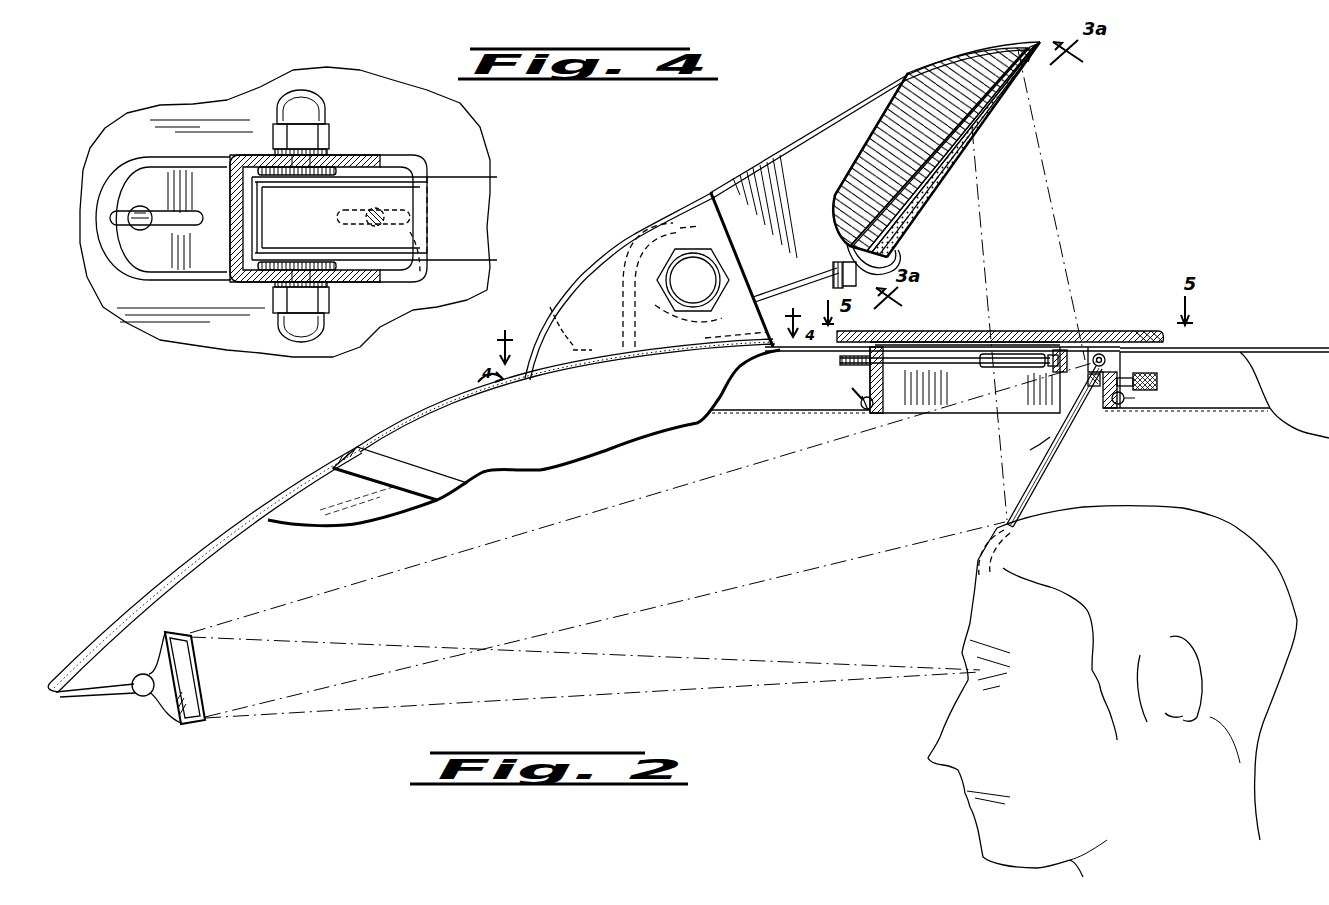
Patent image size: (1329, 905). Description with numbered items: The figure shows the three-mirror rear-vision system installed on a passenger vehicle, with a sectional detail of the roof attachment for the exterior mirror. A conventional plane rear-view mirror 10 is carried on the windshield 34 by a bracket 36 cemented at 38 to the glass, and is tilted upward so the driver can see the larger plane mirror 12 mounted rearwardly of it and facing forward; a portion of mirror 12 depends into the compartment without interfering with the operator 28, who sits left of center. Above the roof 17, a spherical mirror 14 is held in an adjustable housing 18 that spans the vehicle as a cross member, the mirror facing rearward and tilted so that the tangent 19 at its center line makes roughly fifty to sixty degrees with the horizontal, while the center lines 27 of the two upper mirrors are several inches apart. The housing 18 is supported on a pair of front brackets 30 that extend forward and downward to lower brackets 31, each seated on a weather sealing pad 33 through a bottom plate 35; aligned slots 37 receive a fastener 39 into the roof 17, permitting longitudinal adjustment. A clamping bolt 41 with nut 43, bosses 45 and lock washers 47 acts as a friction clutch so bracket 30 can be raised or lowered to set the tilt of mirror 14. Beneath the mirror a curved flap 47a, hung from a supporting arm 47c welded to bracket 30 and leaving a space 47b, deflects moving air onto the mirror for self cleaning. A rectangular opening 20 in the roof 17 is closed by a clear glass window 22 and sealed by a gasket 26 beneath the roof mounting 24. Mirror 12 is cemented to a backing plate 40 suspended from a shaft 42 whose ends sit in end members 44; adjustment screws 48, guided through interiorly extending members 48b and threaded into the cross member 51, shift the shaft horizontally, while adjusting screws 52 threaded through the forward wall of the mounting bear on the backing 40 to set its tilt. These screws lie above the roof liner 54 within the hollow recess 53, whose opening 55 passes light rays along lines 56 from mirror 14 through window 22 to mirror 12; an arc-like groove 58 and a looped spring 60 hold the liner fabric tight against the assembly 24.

In FIG. 2, the rear-view mirror 10 is at (196, 730).
In FIG. 2, the plane mirror 12 is at (1001, 529).
In FIG. 2, the spherical mirror 14 is at (995, 114).
In FIG. 4, the roof 17 is at (477, 147).
In FIG. 2, the roof 17 is at (1287, 348).
In FIG. 2, the holding device 18 is at (915, 66).
In FIG. 2, the tangent to the face of the spherical mirror 19 is at (915, 209).
In FIG. 2, the rectangular opening 20 is at (1114, 350).
In FIG. 2, the clear glass window 22 is at (1090, 332).
In FIG. 2, the roof mounting 24 is at (1156, 330).
In FIG. 2, the sealing gasket 26 is at (1170, 343).
In FIG. 2, the center lines of mirrors 27 is at (960, 162).
In FIG. 2, the operator 28 is at (1225, 519).
In FIG. 4, the front brackets 30 is at (485, 225).
In FIG. 2, the front brackets 30 is at (806, 153).
In FIG. 4, the lower bracket 31 is at (362, 152).
In FIG. 2, the lower bracket 31 is at (655, 238).
In FIG. 2, the weather sealing pad 33 is at (570, 372).
In FIG. 2, the windshield 34 is at (207, 560).
In FIG. 4, the bottom plate 35 is at (188, 255).
In FIG. 2, the bottom plate 35 is at (615, 360).
In FIG. 2, the bracket 36 is at (116, 692).
In FIG. 4, the longitudinal slot 37 is at (175, 228).
In FIG. 2, the cement 38 is at (84, 660).
In FIG. 4, the fastener 39 is at (130, 213).
In FIG. 2, the fastener 39 is at (548, 308).
In FIG. 2, the backing plate 40 is at (1056, 452).
In FIG. 4, the clamping bolt 41 is at (322, 312).
In FIG. 2, the clamping bolt 41 is at (660, 275).
In FIG. 2, the shaft 42 is at (1120, 368).
In FIG. 4, the nut 43 is at (318, 112).
In FIG. 2, the end members 44 is at (905, 372).
In FIG. 4, the bosses 45 is at (280, 166).
In FIG. 4, the lock washers 47 is at (290, 150).
In FIG. 2, the flap 47a is at (905, 250).
In FIG. 2, the space 47b is at (905, 237).
In FIG. 2, the supporting arm 47c is at (797, 272).
In FIG. 2, the adjustment screws 48 is at (1012, 380).
In FIG. 2, the interiorly extending member 48b is at (1050, 348).
In FIG. 2, the cross member 51 is at (840, 365).
In FIG. 2, the adjusting screws 52 is at (1158, 383).
In FIG. 2, the hollow recess 53 is at (935, 418).
In FIG. 2, the roof liner 54 is at (769, 412).
In FIG. 2, the opening 55 is at (893, 416).
In FIG. 2, the lines of light rays 56 is at (990, 474).
In FIG. 2, the arc-like groove 58 is at (866, 411).
In FIG. 2, the looped spring 60 is at (860, 399).